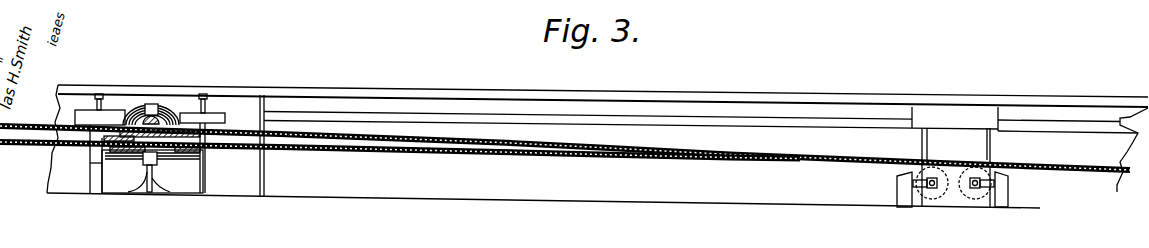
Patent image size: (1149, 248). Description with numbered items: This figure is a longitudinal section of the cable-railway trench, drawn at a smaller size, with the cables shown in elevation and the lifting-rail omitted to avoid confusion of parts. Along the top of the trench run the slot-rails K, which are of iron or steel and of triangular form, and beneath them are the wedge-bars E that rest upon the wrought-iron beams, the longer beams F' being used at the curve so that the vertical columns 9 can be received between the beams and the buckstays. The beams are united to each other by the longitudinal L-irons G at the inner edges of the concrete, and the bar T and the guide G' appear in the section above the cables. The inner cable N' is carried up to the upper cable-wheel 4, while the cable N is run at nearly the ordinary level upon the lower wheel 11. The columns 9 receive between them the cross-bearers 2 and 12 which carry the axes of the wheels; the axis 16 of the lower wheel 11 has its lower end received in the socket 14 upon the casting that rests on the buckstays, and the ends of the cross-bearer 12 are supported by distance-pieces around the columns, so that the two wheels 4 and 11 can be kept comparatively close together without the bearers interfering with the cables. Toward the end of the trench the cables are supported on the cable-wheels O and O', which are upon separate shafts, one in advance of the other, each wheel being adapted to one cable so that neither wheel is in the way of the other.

The cross-bearer 2 is at (139, 110).
The cable-wheel 4 is at (177, 128).
The lower cable-wheel 11 is at (185, 153).
The cross-bearer 12 is at (114, 163).
The socket 14 is at (158, 186).
The axis of the wheel 11 16 is at (155, 163).
The vertical column 9 is at (952, 189).
The wrought-iron beam F' is at (100, 109).
The wedge-bar E is at (208, 103).
The slot-rail K is at (545, 83).
The bar T is at (588, 115).
The inner cable N' is at (565, 148).
The cable N is at (400, 157).
The guide plate G' is at (815, 132).
The longitudinal L-iron G is at (1068, 120).
The cable-wheel O is at (930, 196).
The cable-wheel O' is at (976, 196).